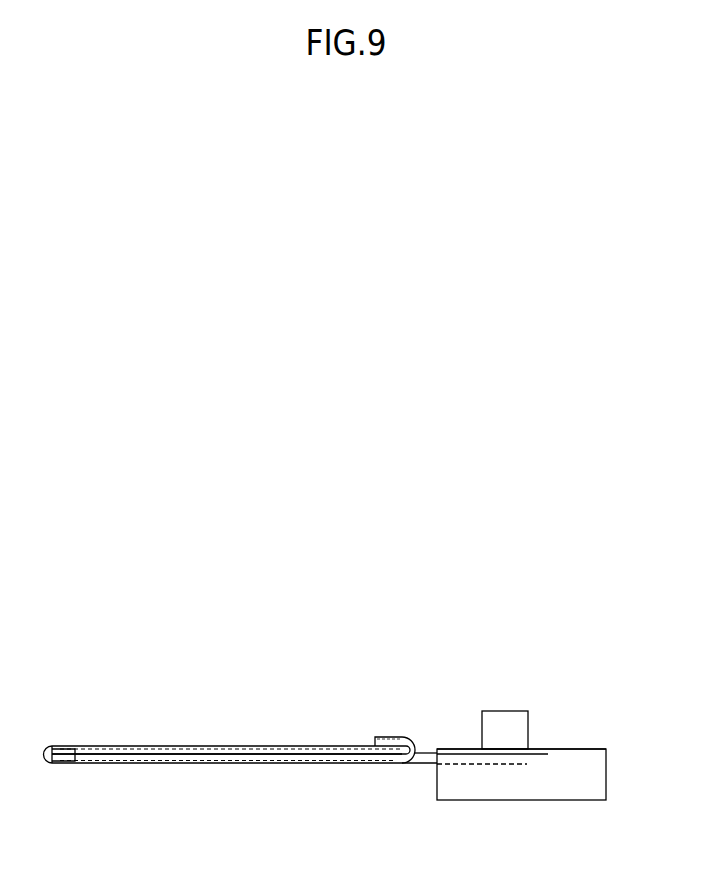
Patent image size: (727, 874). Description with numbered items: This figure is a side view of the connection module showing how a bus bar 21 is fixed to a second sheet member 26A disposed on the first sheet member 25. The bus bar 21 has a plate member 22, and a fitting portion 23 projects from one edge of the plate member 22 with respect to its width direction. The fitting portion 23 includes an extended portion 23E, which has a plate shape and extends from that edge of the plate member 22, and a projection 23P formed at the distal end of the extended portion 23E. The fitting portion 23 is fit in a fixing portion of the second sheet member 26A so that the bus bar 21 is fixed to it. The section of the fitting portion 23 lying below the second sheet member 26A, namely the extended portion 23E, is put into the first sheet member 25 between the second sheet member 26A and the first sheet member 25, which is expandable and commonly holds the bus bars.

The bus bar 21 is at (296, 752).
The plate member 22 is at (113, 745).
The fitting portion 23 is at (420, 774).
The extended portion 23E is at (427, 752).
The projection 23P is at (497, 711).
The first sheet member 25 is at (590, 781).
The second sheet member 26A is at (586, 749).